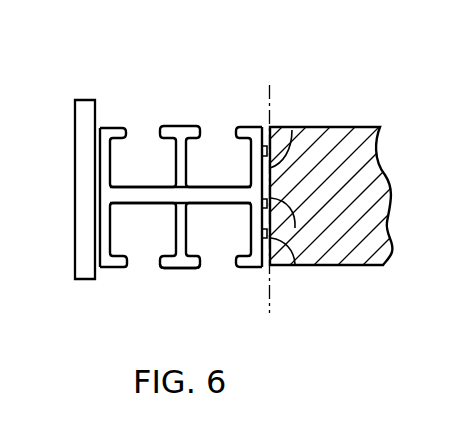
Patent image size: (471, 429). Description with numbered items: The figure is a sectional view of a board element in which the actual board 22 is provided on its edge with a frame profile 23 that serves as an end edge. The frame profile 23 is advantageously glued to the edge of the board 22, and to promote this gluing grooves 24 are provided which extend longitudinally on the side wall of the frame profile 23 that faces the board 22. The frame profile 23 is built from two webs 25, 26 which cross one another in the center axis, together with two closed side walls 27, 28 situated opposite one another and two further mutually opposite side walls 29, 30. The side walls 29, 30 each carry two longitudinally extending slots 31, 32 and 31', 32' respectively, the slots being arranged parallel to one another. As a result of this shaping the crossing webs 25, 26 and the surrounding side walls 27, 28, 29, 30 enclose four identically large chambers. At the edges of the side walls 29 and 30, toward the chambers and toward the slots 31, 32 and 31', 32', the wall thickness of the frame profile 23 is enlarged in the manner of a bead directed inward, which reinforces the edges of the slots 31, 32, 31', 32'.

The board 22 is at (367, 175).
The frame profile 23 is at (110, 203).
The grooves 24 is at (295, 228).
The web 25 is at (225, 194).
The web 26 is at (180, 269).
The closed side wall 27 is at (100, 171).
The closed side wall 28 is at (292, 130).
The side wall 29 is at (186, 126).
The side wall 30 is at (163, 269).
The slot 31 is at (122, 274).
The slot 31' is at (135, 122).
The slot 32 is at (224, 270).
The slot 32' is at (228, 111).